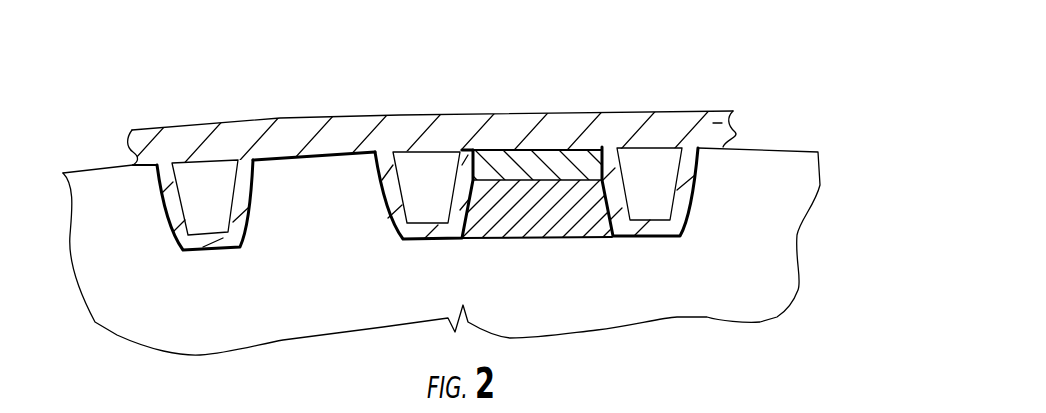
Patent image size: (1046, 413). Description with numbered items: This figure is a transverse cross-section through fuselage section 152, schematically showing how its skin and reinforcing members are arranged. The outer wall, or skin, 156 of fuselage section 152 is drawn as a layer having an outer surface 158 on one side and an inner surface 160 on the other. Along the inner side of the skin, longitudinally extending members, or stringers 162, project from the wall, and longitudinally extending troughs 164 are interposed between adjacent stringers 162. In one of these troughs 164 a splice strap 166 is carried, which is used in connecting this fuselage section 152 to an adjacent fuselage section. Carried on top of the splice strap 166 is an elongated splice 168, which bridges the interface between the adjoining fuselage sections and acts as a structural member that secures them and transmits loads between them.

The fuselage section 152 is at (441, 183).
The outer wall 156 is at (740, 120).
The outer surface 158 is at (615, 110).
The inner surface 160 is at (293, 160).
The stringers 162 is at (207, 243).
The troughs 164 is at (356, 212).
The splice strap 166 is at (543, 168).
The elongated splice 168 is at (497, 217).